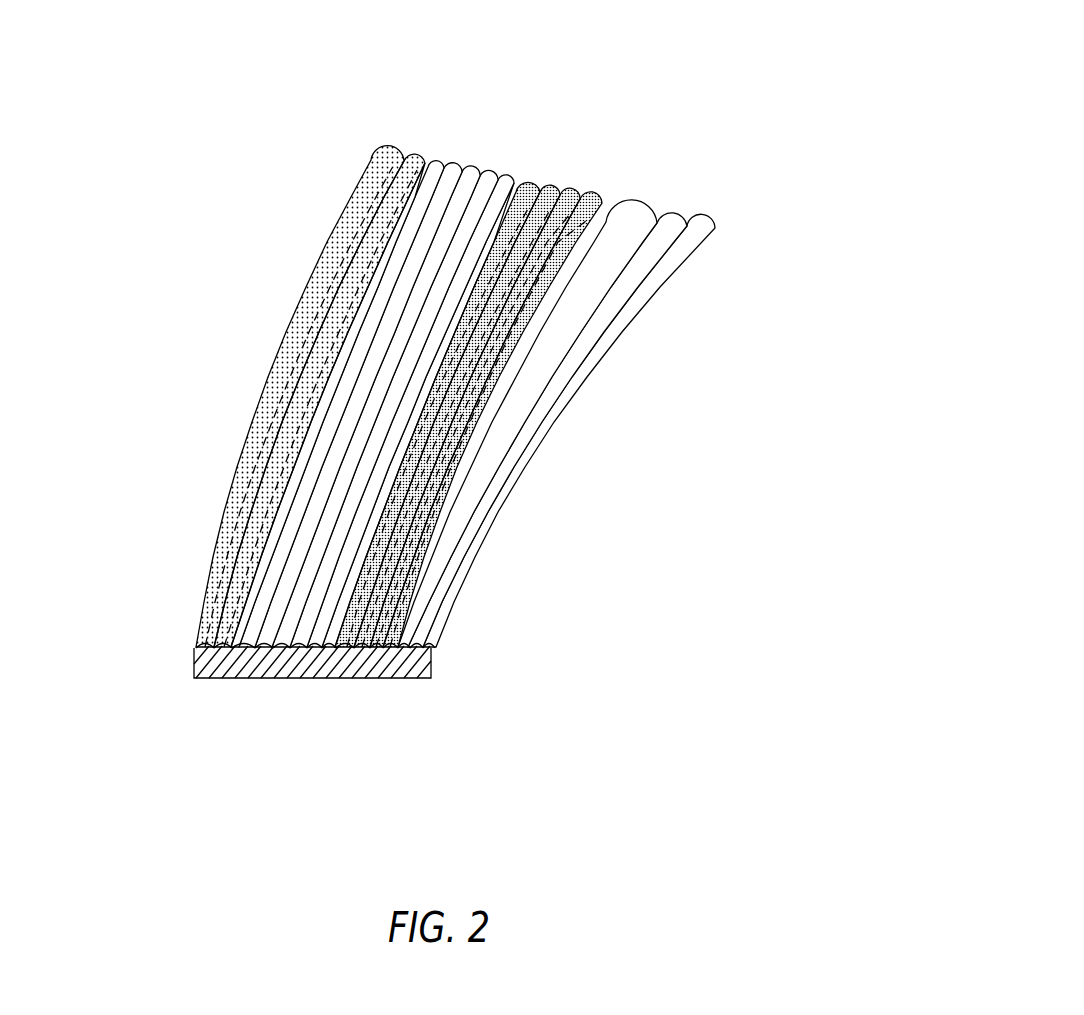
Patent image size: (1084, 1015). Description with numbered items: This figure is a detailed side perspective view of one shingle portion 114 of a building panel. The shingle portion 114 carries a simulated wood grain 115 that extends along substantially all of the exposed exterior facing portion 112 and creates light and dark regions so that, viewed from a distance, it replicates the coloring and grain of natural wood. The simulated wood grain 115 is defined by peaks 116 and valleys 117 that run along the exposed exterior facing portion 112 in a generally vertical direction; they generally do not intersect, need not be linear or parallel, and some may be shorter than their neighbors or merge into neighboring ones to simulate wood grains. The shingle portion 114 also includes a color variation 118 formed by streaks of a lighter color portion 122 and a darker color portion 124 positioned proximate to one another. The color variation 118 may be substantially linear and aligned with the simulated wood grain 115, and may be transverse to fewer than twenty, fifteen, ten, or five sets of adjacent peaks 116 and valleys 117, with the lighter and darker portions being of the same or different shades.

The exposed exterior facing portion 112 is at (124, 105).
The shingle portion 114 is at (768, 58).
The simulated wood grain 115 is at (432, 785).
The peaks 116 is at (368, 648).
The valleys 117 is at (258, 648).
The color variation 118 is at (750, 147).
The lighter color portion 122 is at (535, 178).
The darker color portion 124 is at (443, 149).